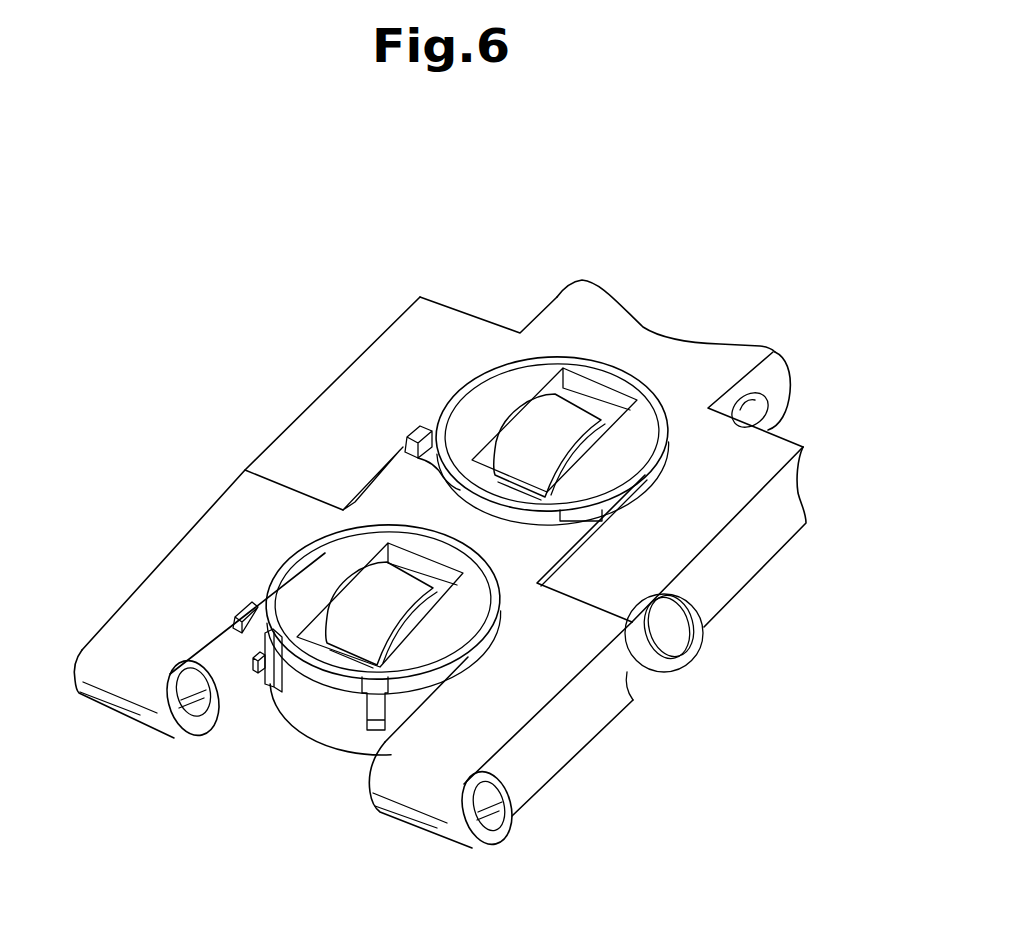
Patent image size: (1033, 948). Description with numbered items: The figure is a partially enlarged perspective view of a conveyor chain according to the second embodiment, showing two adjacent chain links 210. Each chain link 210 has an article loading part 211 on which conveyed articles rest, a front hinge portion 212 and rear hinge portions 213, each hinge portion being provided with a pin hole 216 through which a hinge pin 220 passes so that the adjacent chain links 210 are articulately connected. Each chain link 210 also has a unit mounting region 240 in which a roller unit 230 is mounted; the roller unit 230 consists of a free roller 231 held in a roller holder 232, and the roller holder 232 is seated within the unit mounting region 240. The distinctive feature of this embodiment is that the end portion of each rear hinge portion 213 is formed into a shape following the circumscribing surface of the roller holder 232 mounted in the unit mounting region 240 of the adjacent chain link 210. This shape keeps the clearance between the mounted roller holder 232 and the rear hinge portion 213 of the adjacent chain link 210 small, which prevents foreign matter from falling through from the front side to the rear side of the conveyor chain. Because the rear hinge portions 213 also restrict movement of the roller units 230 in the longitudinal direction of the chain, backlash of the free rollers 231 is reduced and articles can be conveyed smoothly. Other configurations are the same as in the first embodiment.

The chain link 210 is at (380, 326).
The article loading part 211 is at (477, 320).
The front hinge portion 212 is at (284, 465).
The rear hinge portion 213 is at (650, 343).
The pin hole 216 is at (203, 690).
The hinge pin 220 is at (677, 637).
The roller unit 230 is at (428, 527).
The free roller 231 is at (562, 405).
The roller holder 232 is at (517, 383).
The unit mounting region 240 is at (432, 455).